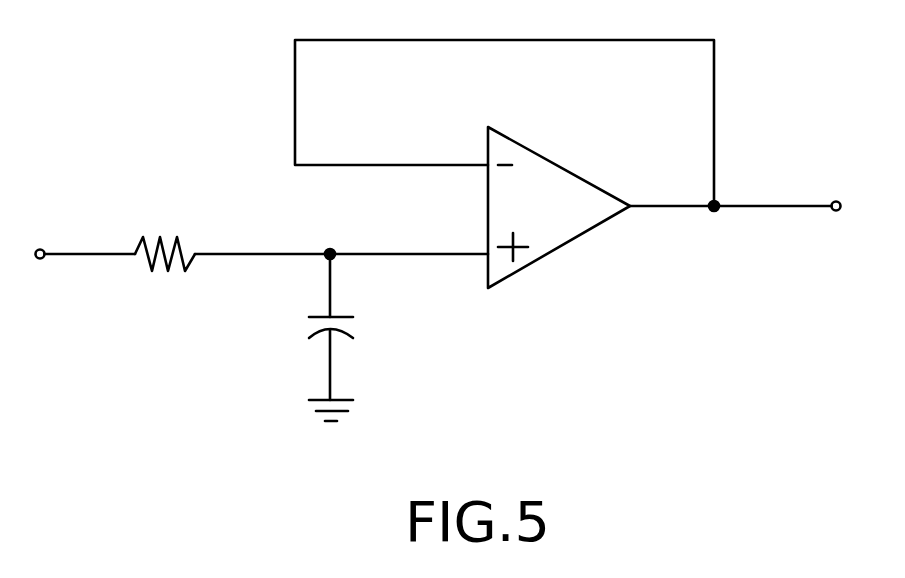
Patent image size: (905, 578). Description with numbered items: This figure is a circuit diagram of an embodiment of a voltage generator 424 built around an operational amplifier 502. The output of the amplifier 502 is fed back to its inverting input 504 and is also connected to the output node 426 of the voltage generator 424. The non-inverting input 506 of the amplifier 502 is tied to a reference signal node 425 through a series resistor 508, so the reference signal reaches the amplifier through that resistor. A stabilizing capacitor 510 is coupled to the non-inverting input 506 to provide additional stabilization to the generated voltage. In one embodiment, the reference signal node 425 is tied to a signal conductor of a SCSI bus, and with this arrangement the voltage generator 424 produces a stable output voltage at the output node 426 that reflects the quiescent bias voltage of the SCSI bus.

The reference signal node 425 is at (87, 255).
The series resistor 508 is at (143, 273).
The stabilizing capacitor 510 is at (368, 330).
The inverting input 504 is at (395, 164).
The non-inverting input 506 is at (402, 252).
The operational amplifier 502 is at (578, 240).
The output node 426 is at (762, 208).
The voltage generator 424 is at (590, 350).